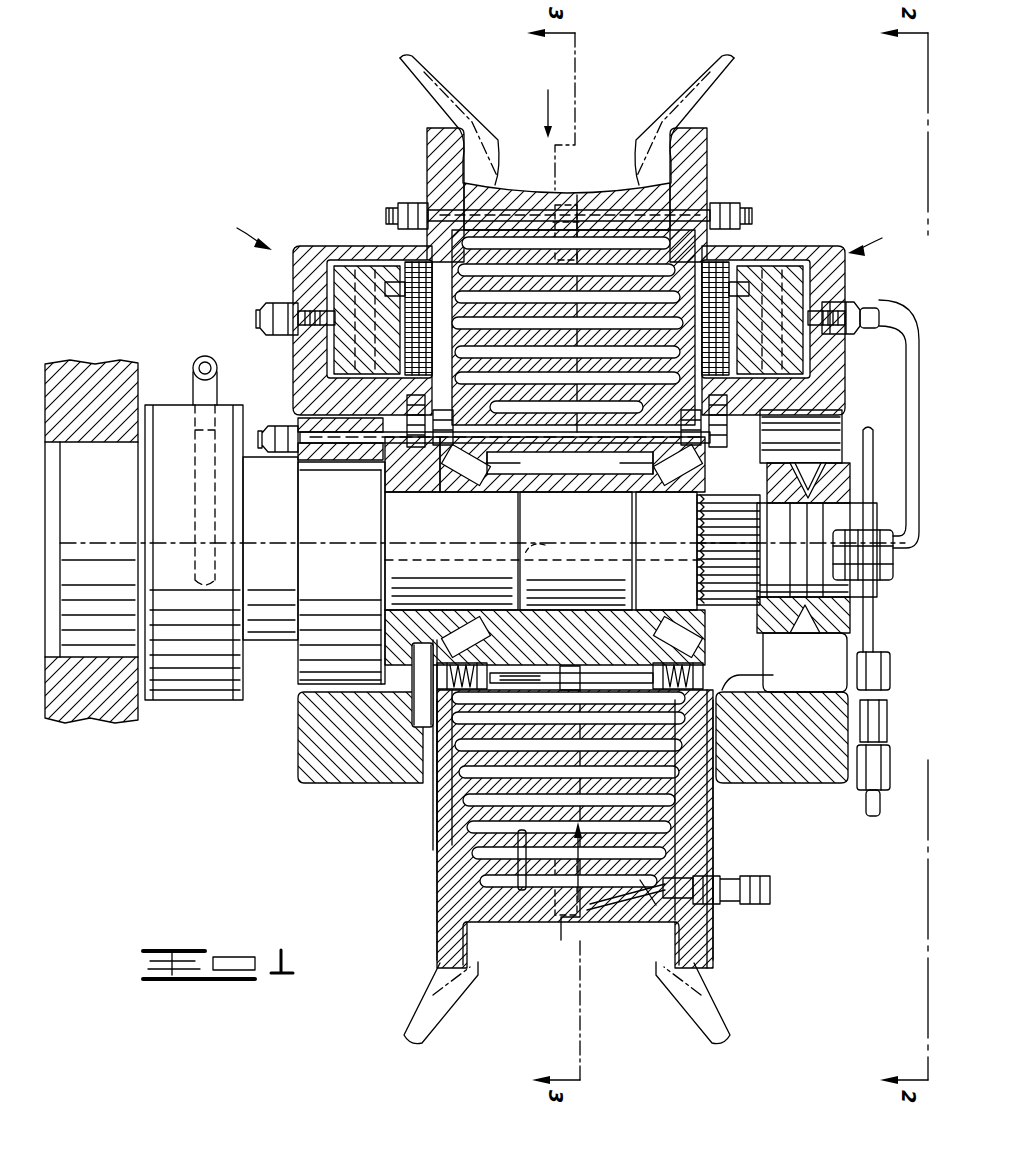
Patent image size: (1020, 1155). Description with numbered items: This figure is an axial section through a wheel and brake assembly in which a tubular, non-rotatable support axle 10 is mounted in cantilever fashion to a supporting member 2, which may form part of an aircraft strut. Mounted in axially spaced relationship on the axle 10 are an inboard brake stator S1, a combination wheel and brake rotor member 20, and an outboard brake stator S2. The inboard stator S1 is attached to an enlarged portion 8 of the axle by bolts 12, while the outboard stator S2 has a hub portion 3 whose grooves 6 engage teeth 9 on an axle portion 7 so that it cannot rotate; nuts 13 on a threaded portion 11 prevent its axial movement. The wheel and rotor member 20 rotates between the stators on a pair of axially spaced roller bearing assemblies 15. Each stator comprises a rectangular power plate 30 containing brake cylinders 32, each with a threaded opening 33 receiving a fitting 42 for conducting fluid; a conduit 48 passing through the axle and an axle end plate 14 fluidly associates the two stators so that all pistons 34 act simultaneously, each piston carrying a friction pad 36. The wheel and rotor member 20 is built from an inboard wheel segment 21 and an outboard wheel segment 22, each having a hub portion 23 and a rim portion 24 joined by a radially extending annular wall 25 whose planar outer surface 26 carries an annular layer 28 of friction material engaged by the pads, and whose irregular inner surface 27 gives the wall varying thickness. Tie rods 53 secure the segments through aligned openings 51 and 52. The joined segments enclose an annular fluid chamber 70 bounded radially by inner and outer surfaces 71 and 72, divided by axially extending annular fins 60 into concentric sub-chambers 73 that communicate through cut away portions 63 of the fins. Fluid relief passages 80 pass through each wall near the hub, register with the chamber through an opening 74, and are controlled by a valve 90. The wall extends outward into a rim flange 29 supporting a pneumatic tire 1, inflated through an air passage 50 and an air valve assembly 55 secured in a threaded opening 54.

The pneumatic tire 1 is at (452, 1000).
The supporting member 2 is at (120, 368).
The hub portion 3 is at (842, 437).
The axially extending grooves 6 is at (777, 612).
The axle portion 7 is at (797, 612).
The enlarged portion of the axle 8 is at (306, 648).
The axially extending teeth 9 is at (717, 513).
The support axle 10 is at (451, 551).
The threaded portion 11 is at (877, 583).
The bolts 12 is at (343, 443).
The nuts 13 is at (809, 462).
The axle end plate 14 is at (895, 475).
The roller bearing assemblies 15 is at (428, 490).
The wheel and brake rotor member 20 is at (545, 102).
The inboard wheel segment 21 is at (414, 151).
The outboard wheel segment 22 is at (722, 149).
The hub portion 23 is at (520, 450).
The rim portion 24 is at (512, 188).
The annular wall 25 is at (458, 790).
The outer surface 26 is at (437, 905).
The inner surface 27 is at (452, 800).
The annular layer of friction material 28 is at (443, 770).
The rim flange 29 is at (690, 957).
The power plate 30 is at (302, 762).
The brake cylinder 32 is at (313, 262).
The opening 33 is at (310, 305).
The piston 34 is at (340, 350).
The friction pad 36 is at (415, 300).
The fitting 42 is at (264, 318).
The conduit 48 is at (548, 540).
The air passage 50 is at (650, 905).
The openings 51 is at (426, 235).
The openings 52 is at (702, 218).
The tie rods 53 is at (452, 205).
The threaded opening 54 is at (695, 882).
The air valve assembly 55 is at (770, 890).
The annular fins 60 is at (447, 750).
The cut away portions 63 is at (570, 202).
The fluid chamber 70 is at (580, 840).
The radially inner surface 71 is at (533, 693).
The radially outer surface 72 is at (526, 882).
The sub-chambers 73 is at (710, 773).
The opening 74 is at (580, 667).
The fluid relief passages 80 is at (517, 673).
The control element or valve 90 is at (378, 797).
The inboard brake stator S1 is at (238, 232).
The outboard brake stator S2 is at (876, 236).